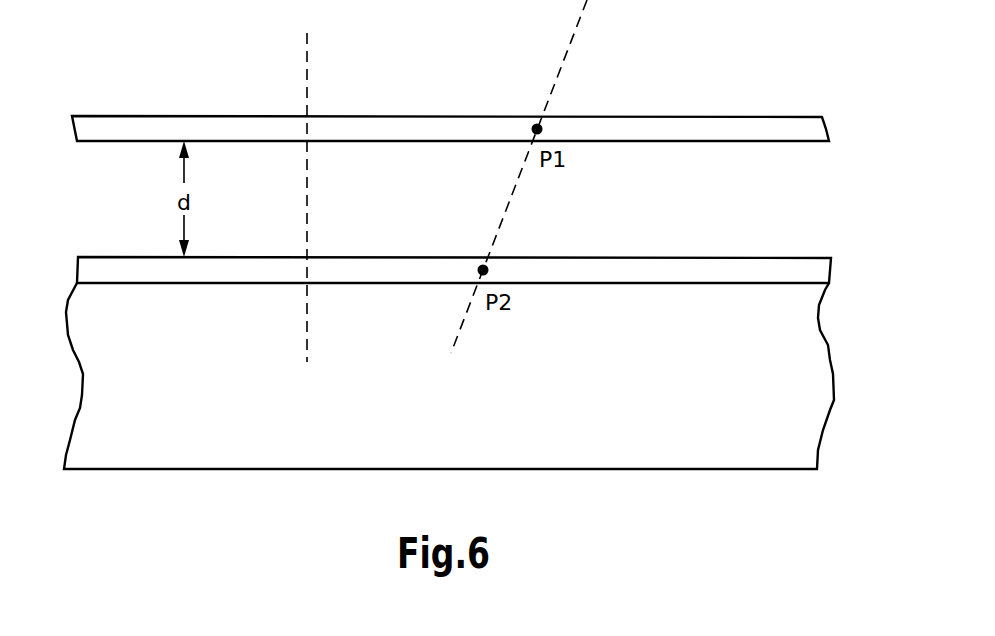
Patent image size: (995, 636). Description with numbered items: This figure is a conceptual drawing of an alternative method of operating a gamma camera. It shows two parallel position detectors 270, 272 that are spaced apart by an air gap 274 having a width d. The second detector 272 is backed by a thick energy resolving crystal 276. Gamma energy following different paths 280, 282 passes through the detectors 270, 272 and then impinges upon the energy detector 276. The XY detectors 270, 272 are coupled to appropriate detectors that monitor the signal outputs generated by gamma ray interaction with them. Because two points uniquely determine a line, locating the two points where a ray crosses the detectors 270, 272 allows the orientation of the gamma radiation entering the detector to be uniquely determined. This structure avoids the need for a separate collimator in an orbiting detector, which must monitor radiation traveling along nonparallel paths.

The position detector 270 is at (740, 122).
The second position detector 272 is at (743, 262).
The air gap 274 is at (652, 224).
The energy resolving crystal 276 is at (652, 440).
The path 280 is at (307, 70).
The path 282 is at (568, 50).